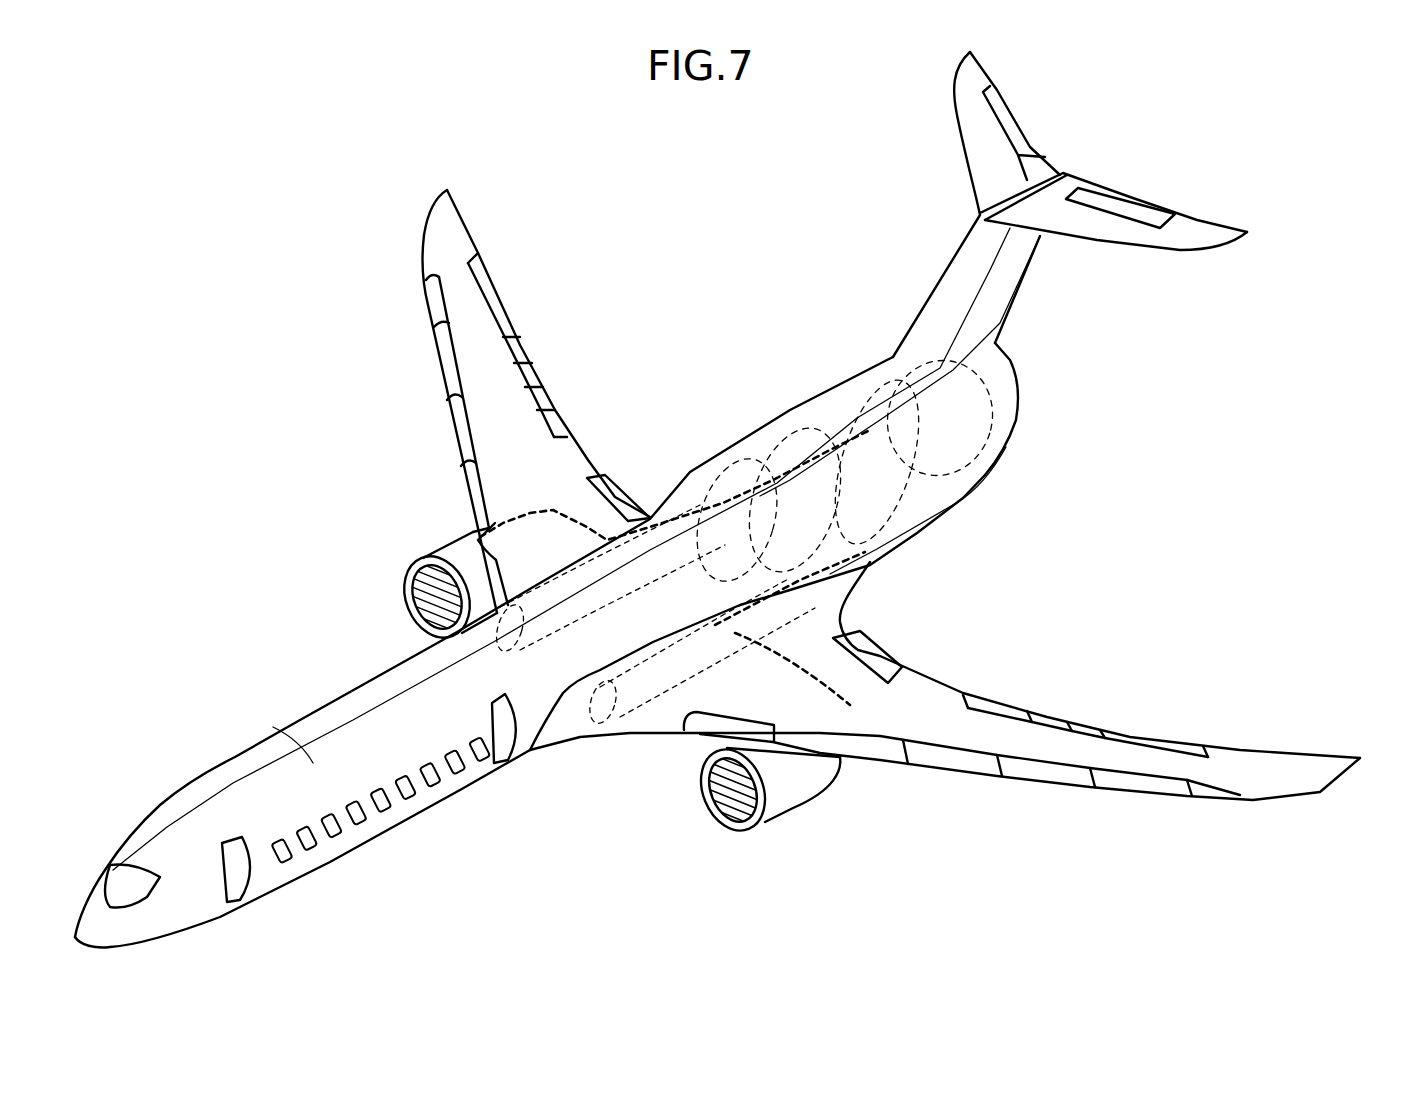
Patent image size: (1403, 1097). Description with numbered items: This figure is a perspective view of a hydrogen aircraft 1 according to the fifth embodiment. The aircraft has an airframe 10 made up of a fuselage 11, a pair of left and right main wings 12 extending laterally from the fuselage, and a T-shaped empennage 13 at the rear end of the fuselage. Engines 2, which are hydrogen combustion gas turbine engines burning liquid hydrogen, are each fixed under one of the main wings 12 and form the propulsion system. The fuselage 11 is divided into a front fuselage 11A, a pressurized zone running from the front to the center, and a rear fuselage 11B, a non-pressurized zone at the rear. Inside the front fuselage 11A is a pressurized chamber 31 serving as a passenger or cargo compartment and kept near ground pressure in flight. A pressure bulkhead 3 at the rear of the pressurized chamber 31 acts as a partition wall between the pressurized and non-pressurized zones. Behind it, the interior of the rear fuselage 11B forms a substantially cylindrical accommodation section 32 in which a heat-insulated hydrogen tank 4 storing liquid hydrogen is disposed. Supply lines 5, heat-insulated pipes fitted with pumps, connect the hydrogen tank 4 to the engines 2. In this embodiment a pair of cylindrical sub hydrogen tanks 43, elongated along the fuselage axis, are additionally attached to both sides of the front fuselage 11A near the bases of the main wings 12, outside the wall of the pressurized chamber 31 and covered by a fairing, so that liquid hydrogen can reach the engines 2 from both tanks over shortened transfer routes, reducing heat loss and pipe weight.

The hydrogen aircraft 1 is at (163, 262).
The airframe 10 is at (198, 446).
The fuselage 11 is at (329, 675).
The front fuselage 11A is at (393, 829).
The rear fuselage 11B is at (1013, 427).
The main wings 12 is at (450, 395).
The empennage 13 is at (948, 272).
The engines 2 is at (404, 574).
The pressure bulkhead 3 is at (705, 480).
The pressurized chamber 31 is at (270, 726).
The accommodation section 32 is at (770, 447).
The hydrogen tank 4 is at (907, 545).
The sub hydrogen tanks 43 is at (543, 580).
The supply lines 5 is at (517, 513).